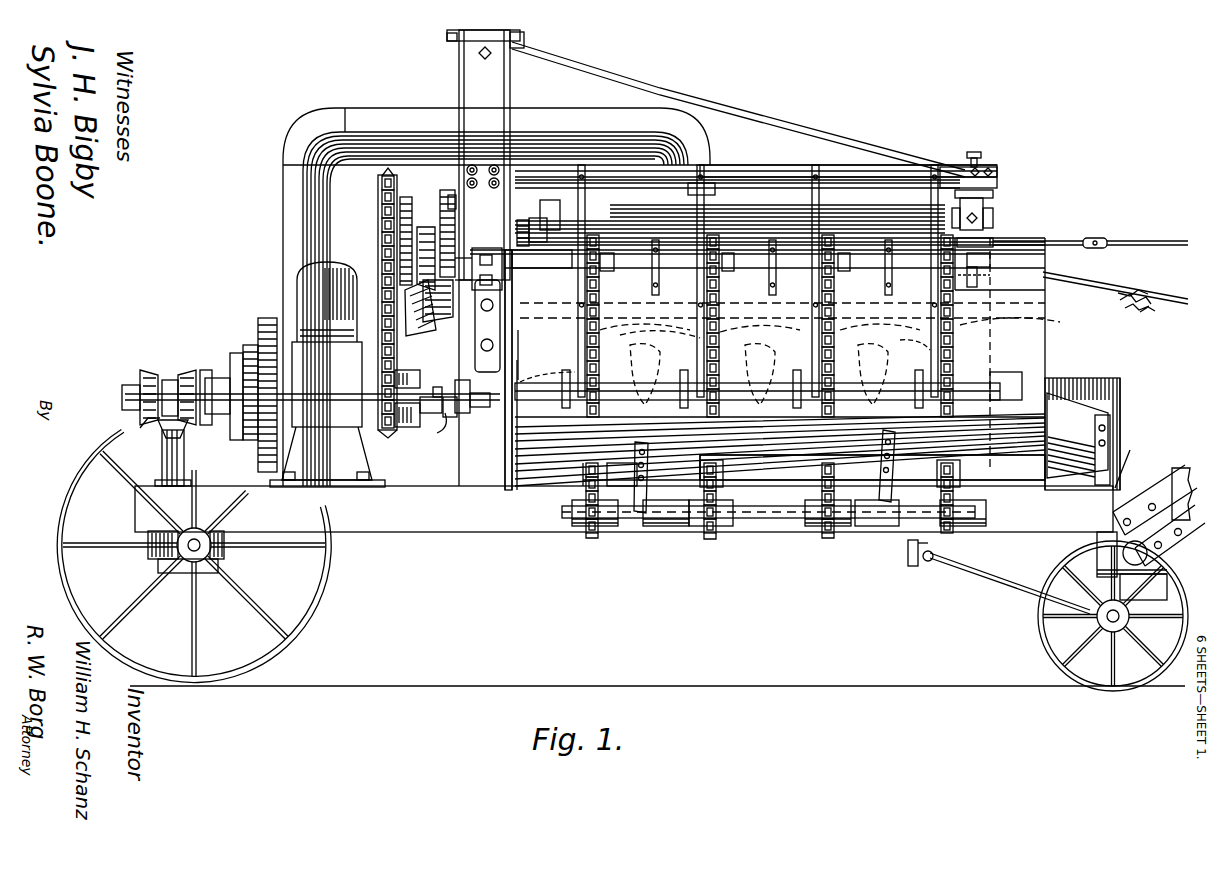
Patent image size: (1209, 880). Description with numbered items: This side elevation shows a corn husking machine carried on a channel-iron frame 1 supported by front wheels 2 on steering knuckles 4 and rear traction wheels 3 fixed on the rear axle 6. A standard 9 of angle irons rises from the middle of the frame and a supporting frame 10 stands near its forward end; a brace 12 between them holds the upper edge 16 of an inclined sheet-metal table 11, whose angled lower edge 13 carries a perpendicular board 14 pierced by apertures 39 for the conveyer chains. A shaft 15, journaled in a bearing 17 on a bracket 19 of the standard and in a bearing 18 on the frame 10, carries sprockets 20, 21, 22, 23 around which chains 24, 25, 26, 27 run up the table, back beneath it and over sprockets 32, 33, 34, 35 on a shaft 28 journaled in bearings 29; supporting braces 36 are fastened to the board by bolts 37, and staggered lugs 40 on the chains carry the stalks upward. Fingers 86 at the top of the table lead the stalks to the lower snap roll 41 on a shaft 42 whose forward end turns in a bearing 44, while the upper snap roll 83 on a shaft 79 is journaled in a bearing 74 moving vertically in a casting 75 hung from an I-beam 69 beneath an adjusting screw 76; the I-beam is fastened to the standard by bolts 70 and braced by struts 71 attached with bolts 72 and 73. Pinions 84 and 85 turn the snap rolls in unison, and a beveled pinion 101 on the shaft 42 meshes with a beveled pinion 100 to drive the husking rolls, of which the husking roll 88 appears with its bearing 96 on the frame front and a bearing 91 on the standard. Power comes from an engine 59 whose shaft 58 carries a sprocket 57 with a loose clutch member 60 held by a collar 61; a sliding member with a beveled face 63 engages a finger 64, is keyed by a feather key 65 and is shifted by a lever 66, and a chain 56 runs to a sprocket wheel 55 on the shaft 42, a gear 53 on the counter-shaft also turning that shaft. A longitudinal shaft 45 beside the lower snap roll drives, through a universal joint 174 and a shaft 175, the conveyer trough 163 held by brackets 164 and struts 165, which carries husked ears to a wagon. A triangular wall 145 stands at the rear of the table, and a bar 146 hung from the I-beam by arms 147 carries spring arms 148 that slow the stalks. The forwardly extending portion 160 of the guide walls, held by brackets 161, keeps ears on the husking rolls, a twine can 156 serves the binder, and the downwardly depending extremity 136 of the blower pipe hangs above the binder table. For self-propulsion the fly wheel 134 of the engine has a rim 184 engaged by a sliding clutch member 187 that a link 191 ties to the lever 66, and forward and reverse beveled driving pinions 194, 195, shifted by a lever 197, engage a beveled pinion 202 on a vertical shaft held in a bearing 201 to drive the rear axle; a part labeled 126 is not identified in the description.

The frame 1 is at (651, 543).
The front wheels 2 is at (1042, 622).
The rear traction wheels 3 is at (320, 595).
The steering knuckles 4 is at (1130, 604).
The rear axle 6 is at (197, 559).
The standard 9 is at (470, 76).
The supporting frame 10 is at (990, 448).
The inclined table 11 is at (660, 345).
The brace 12 is at (532, 370).
The lower edge 13 is at (772, 486).
The board 14 is at (792, 456).
The shaft 15 is at (567, 262).
The upper edge 16 is at (655, 275).
The bearing 17 is at (490, 250).
The bearing 18 is at (990, 265).
The bracket 19 is at (475, 335).
The sprocket 20 is at (632, 270).
The sprocket 21 is at (730, 278).
The sprocket 22 is at (845, 278).
The sprocket 23 is at (972, 280).
The chain 24 is at (607, 326).
The chain 25 is at (728, 326).
The chain 26 is at (842, 326).
The chain 27 is at (964, 326).
The shaft 28 is at (645, 530).
The bearings 29 is at (680, 530).
The sprocket 32 is at (578, 530).
The sprocket 33 is at (740, 530).
The sprocket 34 is at (815, 530).
The sprocket 35 is at (962, 530).
The supporting braces 36 is at (937, 470).
The bolts 37 is at (896, 447).
The apertures 39 is at (586, 485).
The lugs 40 is at (771, 385).
The lower snap roll 41 is at (622, 240).
The shaft 42 is at (575, 225).
The bearing 44 is at (998, 238).
The longitudinal shaft 45 is at (1063, 237).
The gear 53 is at (385, 215).
The sprocket wheel 55 is at (382, 233).
The chain 56 is at (396, 314).
The sprocket 57 is at (400, 428).
The engine shaft 58 is at (488, 408).
The engine 59 is at (327, 374).
The loose clutch member 60 is at (408, 370).
The collar 61 is at (425, 440).
The beveled face 63 is at (441, 440).
The finger 64 is at (440, 440).
The feather key 65 is at (470, 396).
The lever 66 is at (437, 387).
The I-beam 69 is at (770, 172).
The bolts 70 is at (494, 164).
The struts 71 is at (660, 88).
The bolts 72 is at (988, 168).
The bolts 73 is at (524, 40).
The bearing 74 is at (995, 218).
The casting 75 is at (1000, 210).
The adjusting screw 76 is at (972, 152).
The upper snap roll shaft 79 is at (560, 235).
The upper snap roll 83 is at (835, 212).
The pinion 84 is at (447, 195).
The pinion 85 is at (426, 226).
The fingers 86 is at (668, 280).
The husking roll 88 is at (1080, 470).
The bearing 91 is at (445, 322).
The bearing 96 is at (1125, 462).
The beveled pinion 100 is at (425, 294).
The beveled pinion 101 is at (388, 176).
The bearing 126 is at (521, 224).
The fly wheel 134 is at (268, 318).
The downwardly depending extremity 136 is at (700, 185).
The wall 145 is at (518, 358).
The bar 146 is at (1020, 376).
The arms 147 is at (724, 356).
The spring arms 148 is at (757, 401).
The twine can 156 is at (1115, 380).
The forwardly extending portion 160 is at (1050, 410).
The brackets 161 is at (1108, 432).
The trough 163 is at (1172, 478).
The brackets 164 is at (1140, 500).
The struts 165 is at (1145, 296).
The universal joint 174 is at (1092, 240).
The shaft 175 is at (1150, 240).
The rim 184 is at (246, 345).
The sliding clutch member 187 is at (215, 376).
The link 191 is at (325, 401).
The forward beveled driving pinion 194 is at (186, 368).
The reverse beveled driving pinion 195 is at (148, 370).
The lever 197 is at (170, 380).
The bearing 201 is at (185, 457).
The beveled pinion 202 is at (155, 432).